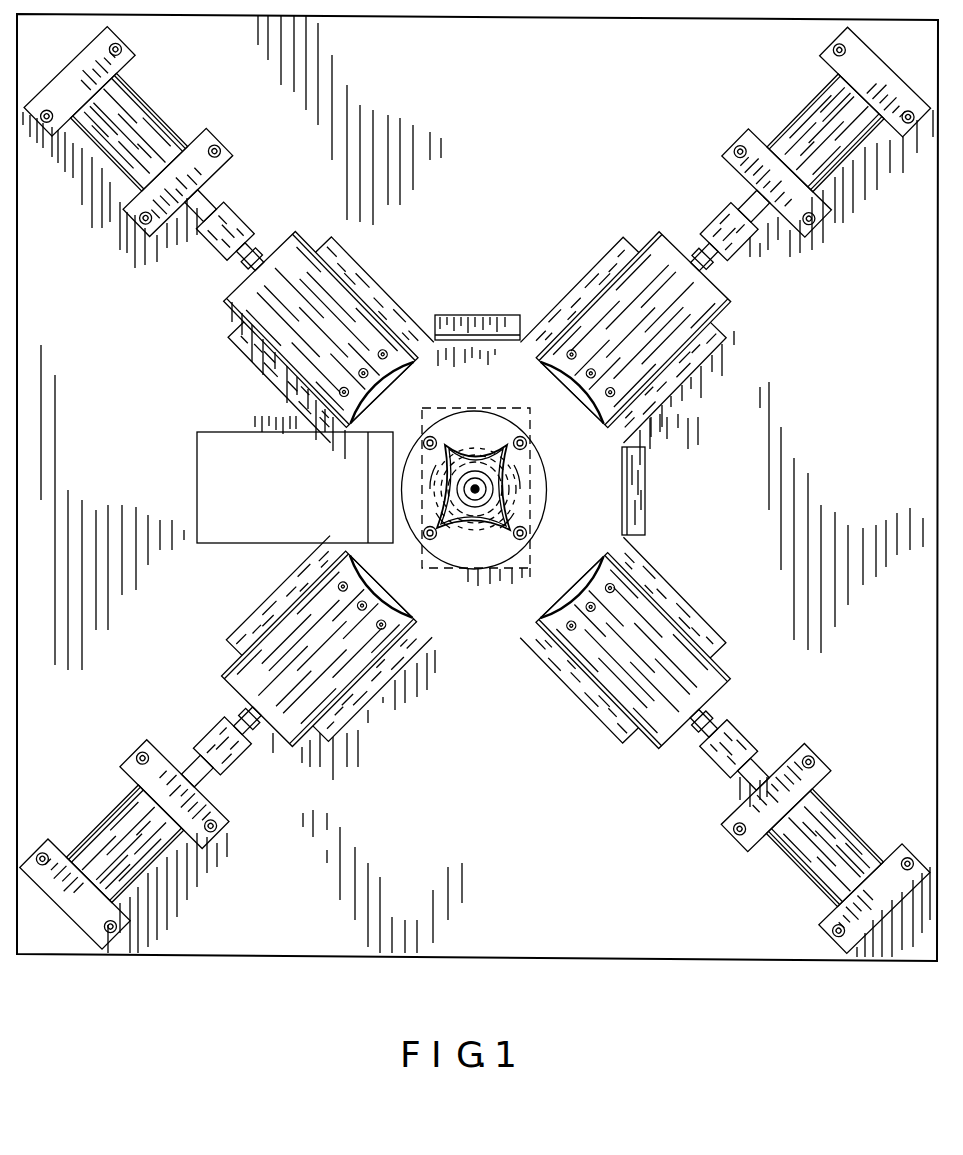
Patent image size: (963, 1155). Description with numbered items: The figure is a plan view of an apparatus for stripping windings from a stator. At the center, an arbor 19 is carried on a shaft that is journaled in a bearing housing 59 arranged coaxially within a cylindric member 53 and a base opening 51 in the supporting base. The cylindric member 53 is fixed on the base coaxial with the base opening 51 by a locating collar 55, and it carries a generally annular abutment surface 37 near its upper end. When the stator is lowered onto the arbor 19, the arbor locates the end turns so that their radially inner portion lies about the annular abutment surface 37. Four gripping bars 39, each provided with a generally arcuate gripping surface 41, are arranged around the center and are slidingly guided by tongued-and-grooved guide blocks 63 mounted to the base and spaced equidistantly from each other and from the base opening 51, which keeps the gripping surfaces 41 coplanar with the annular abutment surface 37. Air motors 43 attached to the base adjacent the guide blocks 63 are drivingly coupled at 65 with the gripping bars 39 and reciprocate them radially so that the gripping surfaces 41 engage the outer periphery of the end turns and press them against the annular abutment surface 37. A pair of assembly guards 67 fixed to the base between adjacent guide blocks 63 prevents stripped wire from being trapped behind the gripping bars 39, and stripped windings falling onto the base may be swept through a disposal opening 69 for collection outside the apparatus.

The arbor 19 is at (522, 476).
The annular abutment surface 37 is at (522, 522).
The gripping bars 39 is at (316, 311).
The gripping surface 41 is at (403, 378).
The air motors 43 is at (134, 134).
The base opening 51 is at (473, 462).
The cylindric member 53 is at (446, 532).
The locating collar 55 is at (402, 522).
The bearing housing 59 is at (492, 404).
The guide blocks 63 is at (230, 344).
The drive coupling 65 is at (238, 224).
The assembly guards 67 is at (487, 314).
The disposal opening 69 is at (197, 468).